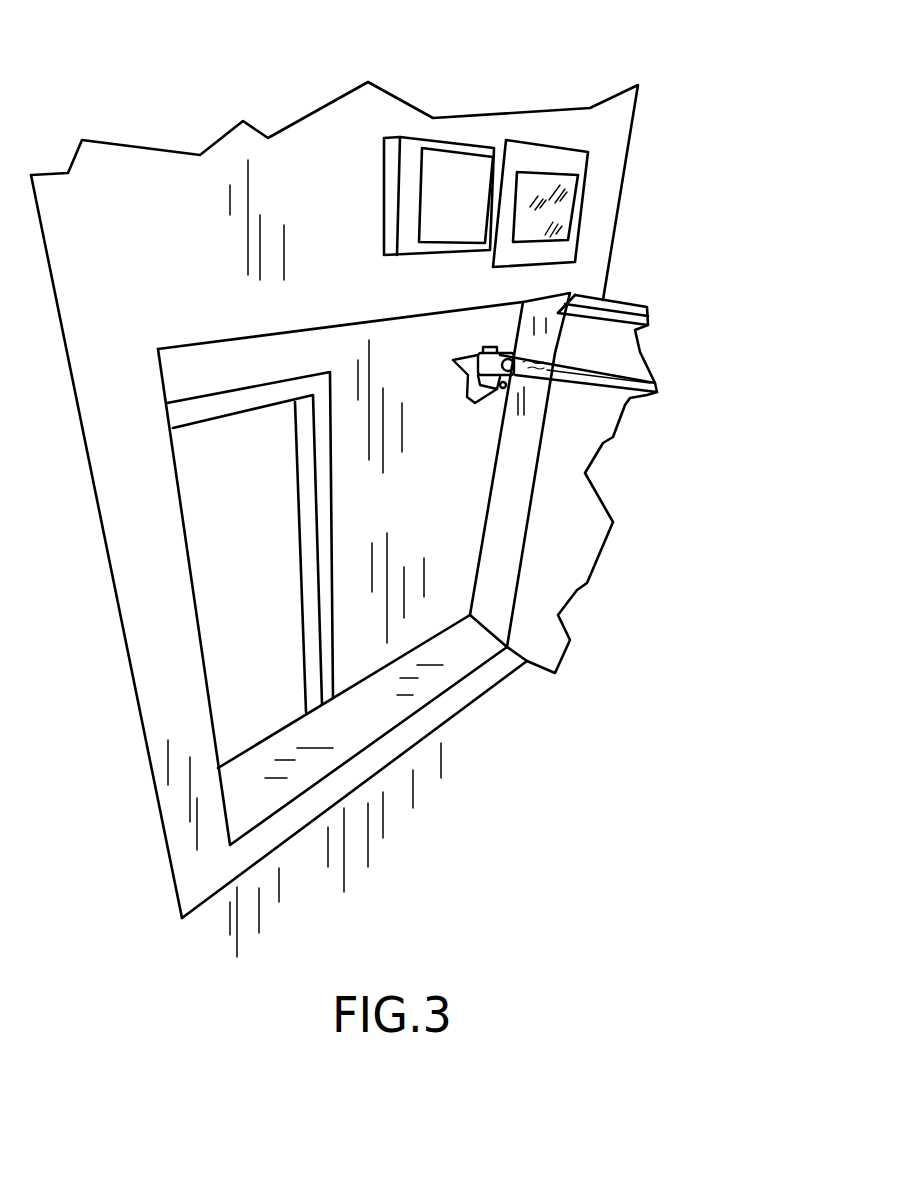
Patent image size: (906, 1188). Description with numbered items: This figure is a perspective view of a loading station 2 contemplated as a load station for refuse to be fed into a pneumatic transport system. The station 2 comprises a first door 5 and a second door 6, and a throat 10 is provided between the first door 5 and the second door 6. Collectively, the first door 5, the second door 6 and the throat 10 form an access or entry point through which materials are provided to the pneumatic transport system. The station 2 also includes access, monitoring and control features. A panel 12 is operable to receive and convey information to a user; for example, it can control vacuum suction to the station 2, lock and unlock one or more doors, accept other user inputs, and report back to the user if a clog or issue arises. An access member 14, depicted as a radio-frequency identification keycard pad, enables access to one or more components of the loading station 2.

The loading station 2 is at (722, 264).
The first door 5 is at (602, 445).
The second door 6 is at (195, 482).
The throat 10 is at (472, 493).
The panel 12 is at (582, 203).
The access member 14 is at (403, 138).